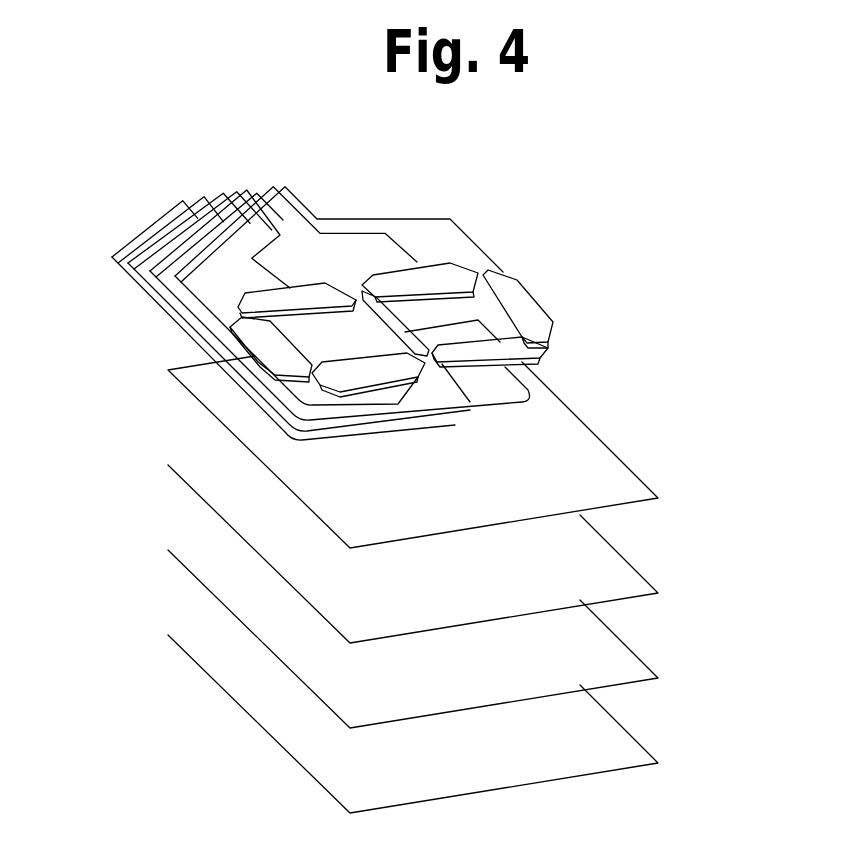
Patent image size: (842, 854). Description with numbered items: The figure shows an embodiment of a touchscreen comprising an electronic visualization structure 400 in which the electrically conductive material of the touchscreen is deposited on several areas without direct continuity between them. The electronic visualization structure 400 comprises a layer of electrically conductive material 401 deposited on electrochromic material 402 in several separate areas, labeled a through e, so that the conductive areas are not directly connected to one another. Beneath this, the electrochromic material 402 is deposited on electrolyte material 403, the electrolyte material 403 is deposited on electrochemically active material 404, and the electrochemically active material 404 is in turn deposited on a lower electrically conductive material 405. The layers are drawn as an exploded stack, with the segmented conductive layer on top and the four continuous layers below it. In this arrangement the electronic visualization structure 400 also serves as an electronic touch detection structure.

The electronic visualization structure 400 is at (100, 161).
The layer of electrically conductive material 401 is at (540, 323).
The electrochromic material 402 is at (575, 467).
The electrolyte material 403 is at (575, 566).
The electrochemically active material 404 is at (575, 657).
The electrically conductive material 405 is at (572, 742).